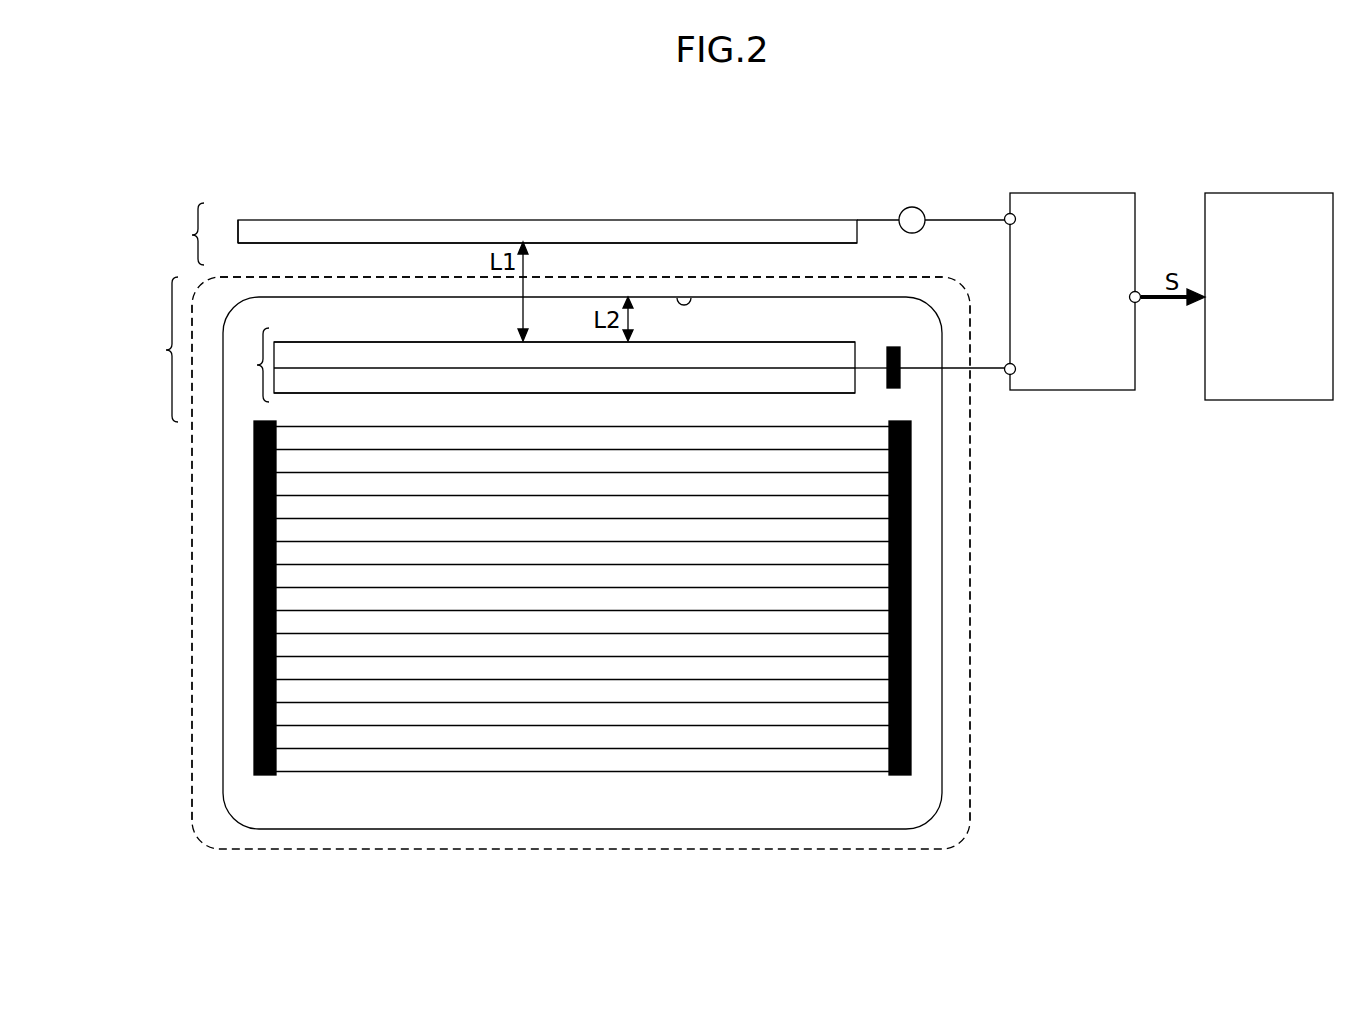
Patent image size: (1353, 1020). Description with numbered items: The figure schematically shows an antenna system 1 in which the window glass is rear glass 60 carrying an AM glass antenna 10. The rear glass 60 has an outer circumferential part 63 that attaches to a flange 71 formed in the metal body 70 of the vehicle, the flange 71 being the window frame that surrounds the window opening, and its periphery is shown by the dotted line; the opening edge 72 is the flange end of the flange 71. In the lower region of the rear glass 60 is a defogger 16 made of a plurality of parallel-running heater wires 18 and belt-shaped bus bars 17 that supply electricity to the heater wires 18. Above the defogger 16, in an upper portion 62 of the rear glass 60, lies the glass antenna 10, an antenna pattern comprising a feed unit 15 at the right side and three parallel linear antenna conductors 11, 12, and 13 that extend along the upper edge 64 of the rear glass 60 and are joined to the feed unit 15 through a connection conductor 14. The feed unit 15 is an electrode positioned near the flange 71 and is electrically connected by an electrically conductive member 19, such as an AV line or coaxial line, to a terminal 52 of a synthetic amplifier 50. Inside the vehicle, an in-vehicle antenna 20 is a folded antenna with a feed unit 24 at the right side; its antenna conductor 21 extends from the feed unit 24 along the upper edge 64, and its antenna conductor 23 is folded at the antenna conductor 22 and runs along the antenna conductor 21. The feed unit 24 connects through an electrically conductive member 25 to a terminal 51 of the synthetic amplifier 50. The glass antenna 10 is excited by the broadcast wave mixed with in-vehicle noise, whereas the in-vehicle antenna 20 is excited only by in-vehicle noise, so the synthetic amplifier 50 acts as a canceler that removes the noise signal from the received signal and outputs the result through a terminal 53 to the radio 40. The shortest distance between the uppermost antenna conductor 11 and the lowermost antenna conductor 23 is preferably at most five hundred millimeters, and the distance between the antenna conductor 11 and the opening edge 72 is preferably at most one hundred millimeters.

The antenna system 1 is at (137, 122).
The glass antenna 10 is at (540, 365).
The antenna conductor 11 is at (345, 342).
The antenna conductor 12 is at (345, 368).
The antenna conductor 13 is at (345, 393).
The connection conductor 14 is at (877, 368).
The feed unit 15 is at (893, 347).
The defogger 16 is at (582, 612).
The bus bar 17 is at (263, 553).
The heater wire 18 is at (740, 426).
The electrically conductive member 19 is at (905, 374).
The in-vehicle antenna 20 is at (183, 234).
The antenna conductor 21 is at (388, 220).
The antenna conductor 22 is at (238, 222).
The antenna conductor 23 is at (300, 243).
The feed unit 24 is at (910, 207).
The electrically conductive member 25 is at (958, 218).
The radio 40 is at (1275, 193).
The synthetic amplifier 50 is at (1072, 193).
The terminal 51 is at (1006, 214).
The terminal 52 is at (1008, 376).
The terminal 53 is at (1140, 292).
The rear glass 60 is at (950, 583).
The upper portion 62 is at (156, 349).
The outer circumferential part 63 is at (207, 622).
The upper edge 64 is at (893, 277).
The metal body 70 is at (985, 660).
The flange 71 is at (958, 622).
The opening edge 72 is at (688, 298).